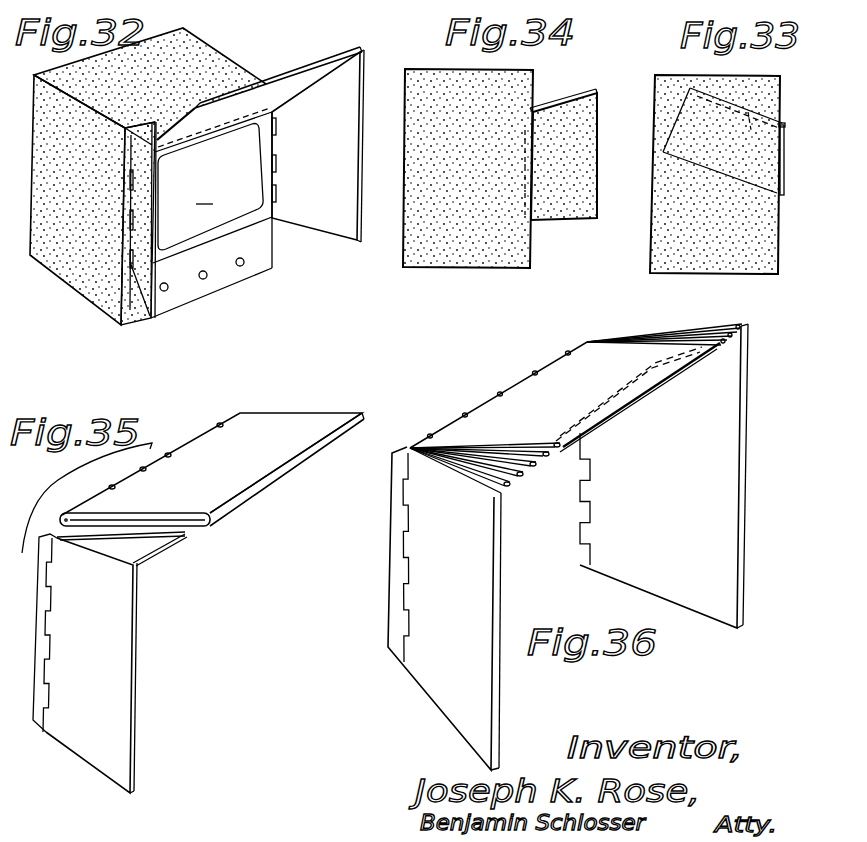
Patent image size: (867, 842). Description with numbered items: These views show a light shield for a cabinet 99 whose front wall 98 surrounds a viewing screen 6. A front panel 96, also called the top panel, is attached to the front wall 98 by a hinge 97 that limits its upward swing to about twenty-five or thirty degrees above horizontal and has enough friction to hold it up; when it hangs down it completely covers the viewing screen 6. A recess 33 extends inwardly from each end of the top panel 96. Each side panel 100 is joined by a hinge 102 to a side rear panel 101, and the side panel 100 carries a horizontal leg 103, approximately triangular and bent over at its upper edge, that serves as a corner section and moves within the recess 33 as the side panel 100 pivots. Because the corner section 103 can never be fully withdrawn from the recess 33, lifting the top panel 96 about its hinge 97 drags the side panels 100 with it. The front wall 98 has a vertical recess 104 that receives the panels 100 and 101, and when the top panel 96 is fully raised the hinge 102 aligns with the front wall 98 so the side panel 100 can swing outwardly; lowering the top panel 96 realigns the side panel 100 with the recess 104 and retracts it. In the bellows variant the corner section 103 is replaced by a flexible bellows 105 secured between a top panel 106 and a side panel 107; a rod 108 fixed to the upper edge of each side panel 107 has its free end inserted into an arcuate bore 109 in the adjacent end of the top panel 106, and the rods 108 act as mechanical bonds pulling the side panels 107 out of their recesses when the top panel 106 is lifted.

In FIG. 32, the viewing screen 6 is at (204, 193).
In FIG. 35, the recess 33 is at (203, 527).
In FIG. 32, the front panel 96 is at (299, 68).
In FIG. 34, the front panel 96 is at (568, 100).
In FIG. 33, the front panel 96 is at (783, 191).
In FIG. 35, the front panel 96 is at (300, 422).
In FIG. 32, the hinge 97 is at (200, 140).
In FIG. 33, the hinge 97 is at (784, 124).
In FIG. 32, the front wall 98 is at (247, 270).
In FIG. 32, the cabinet 99 is at (234, 55).
In FIG. 34, the cabinet 99 is at (494, 166).
In FIG. 33, the cabinet 99 is at (711, 174).
In FIG. 32, the side panel 100 is at (341, 122).
In FIG. 34, the side panel 100 is at (597, 153).
In FIG. 33, the side panel 100 is at (715, 174).
In FIG. 35, the side panel 100 is at (118, 703).
In FIG. 34, the side rear panel 101 is at (524, 191).
In FIG. 33, the side rear panel 101 is at (722, 120).
In FIG. 35, the side rear panel 101 is at (34, 596).
In FIG. 36, the side rear panel 101 is at (392, 511).
In FIG. 32, the hinge 102 is at (280, 163).
In FIG. 33, the hinge 102 is at (721, 144).
In FIG. 35, the hinge 102 is at (50, 642).
In FIG. 36, the hinge 102 is at (404, 545).
In FIG. 32, the horizontal leg 103 is at (169, 123).
In FIG. 35, the horizontal leg 103 is at (148, 546).
In FIG. 32, the vertical recess 104 is at (126, 278).
In FIG. 36, the flexible bellows 105 is at (703, 330).
In FIG. 36, the top panel 106 is at (566, 375).
In FIG. 36, the side panel 107 is at (425, 568).
In FIG. 36, the rod 108 is at (668, 360).
In FIG. 36, the arcuate bore 109 is at (648, 367).